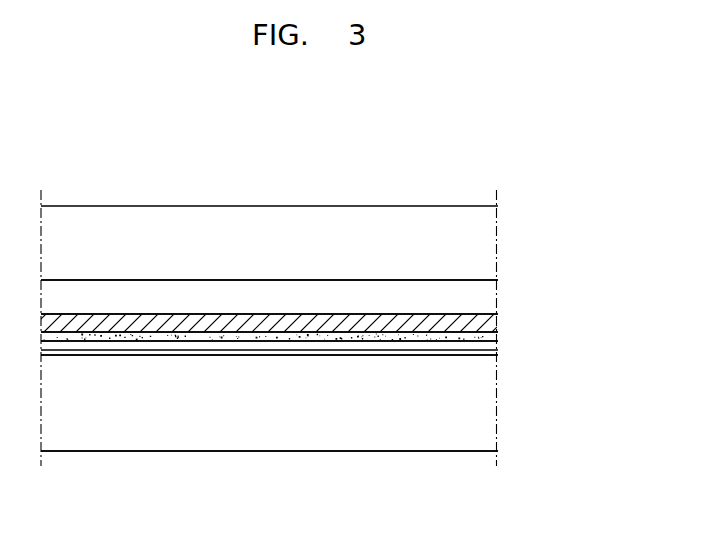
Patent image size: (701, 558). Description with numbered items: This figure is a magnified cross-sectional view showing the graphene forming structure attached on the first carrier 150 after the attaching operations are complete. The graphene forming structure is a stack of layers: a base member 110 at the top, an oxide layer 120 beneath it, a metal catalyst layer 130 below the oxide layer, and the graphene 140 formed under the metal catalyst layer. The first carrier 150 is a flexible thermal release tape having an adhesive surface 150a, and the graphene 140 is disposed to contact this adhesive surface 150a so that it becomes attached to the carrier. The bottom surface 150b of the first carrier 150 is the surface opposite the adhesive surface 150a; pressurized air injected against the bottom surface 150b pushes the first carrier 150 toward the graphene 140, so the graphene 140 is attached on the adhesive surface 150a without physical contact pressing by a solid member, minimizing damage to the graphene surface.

The base member 110 is at (490, 258).
The oxide layer 120 is at (485, 297).
The metal catalyst layer 130 is at (493, 324).
The graphene 140 is at (493, 340).
The adhesive surface 150a is at (490, 350).
The first carrier 150 is at (487, 409).
The bottom surface 150b is at (427, 451).